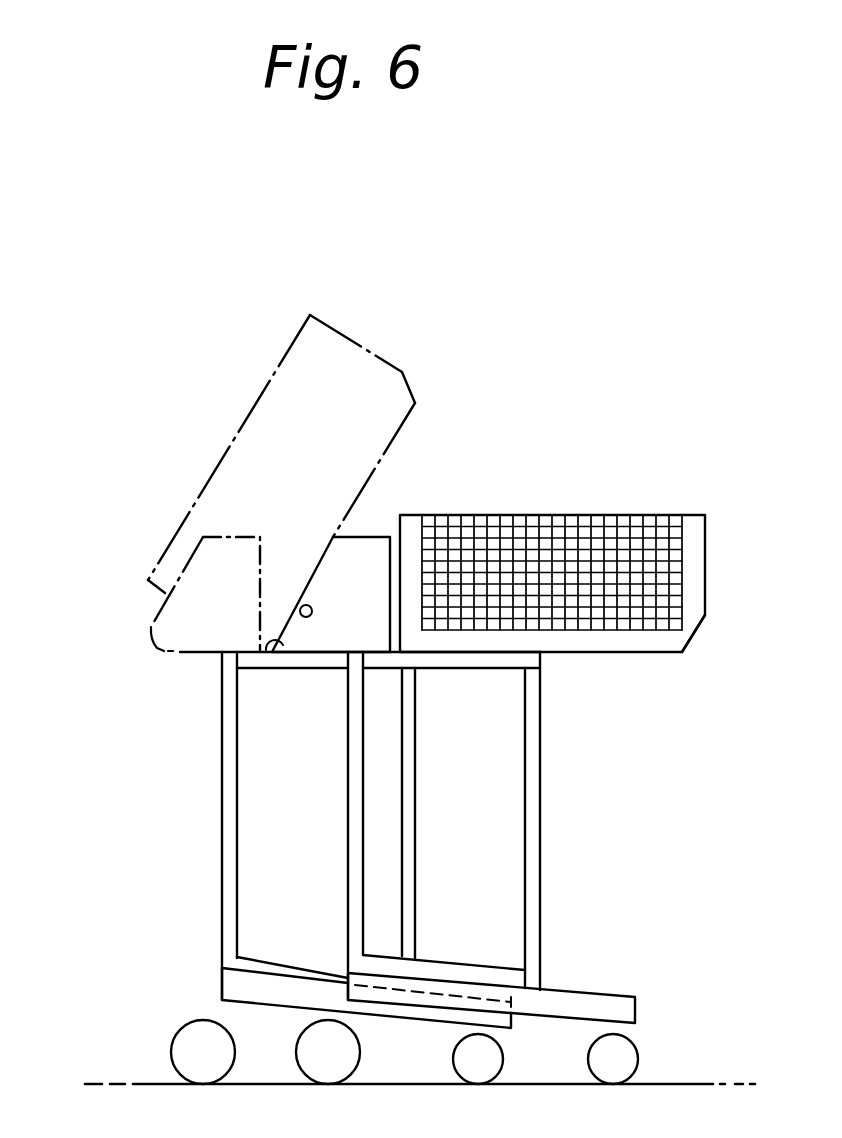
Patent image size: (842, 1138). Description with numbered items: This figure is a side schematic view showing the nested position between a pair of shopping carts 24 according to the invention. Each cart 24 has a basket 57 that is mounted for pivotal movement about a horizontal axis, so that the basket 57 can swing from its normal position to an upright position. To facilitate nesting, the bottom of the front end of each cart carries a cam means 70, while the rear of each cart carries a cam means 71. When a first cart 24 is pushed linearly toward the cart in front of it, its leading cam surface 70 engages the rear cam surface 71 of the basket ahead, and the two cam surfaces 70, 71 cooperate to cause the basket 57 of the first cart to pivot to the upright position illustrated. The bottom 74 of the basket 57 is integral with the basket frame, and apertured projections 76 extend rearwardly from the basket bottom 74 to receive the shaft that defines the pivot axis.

The shopping cart 24 is at (390, 342).
The basket 57 is at (199, 423).
The cam means 70 is at (444, 387).
The cam means 71 is at (147, 636).
The bottom 74 is at (410, 520).
The apertured projections 76 is at (690, 650).